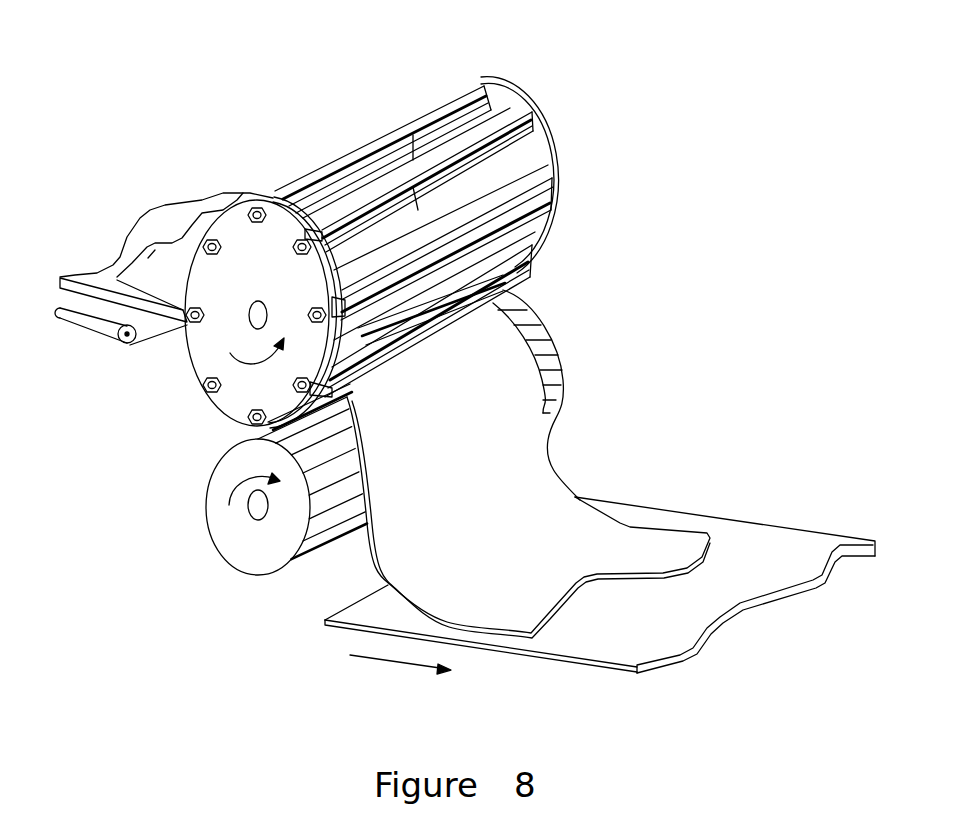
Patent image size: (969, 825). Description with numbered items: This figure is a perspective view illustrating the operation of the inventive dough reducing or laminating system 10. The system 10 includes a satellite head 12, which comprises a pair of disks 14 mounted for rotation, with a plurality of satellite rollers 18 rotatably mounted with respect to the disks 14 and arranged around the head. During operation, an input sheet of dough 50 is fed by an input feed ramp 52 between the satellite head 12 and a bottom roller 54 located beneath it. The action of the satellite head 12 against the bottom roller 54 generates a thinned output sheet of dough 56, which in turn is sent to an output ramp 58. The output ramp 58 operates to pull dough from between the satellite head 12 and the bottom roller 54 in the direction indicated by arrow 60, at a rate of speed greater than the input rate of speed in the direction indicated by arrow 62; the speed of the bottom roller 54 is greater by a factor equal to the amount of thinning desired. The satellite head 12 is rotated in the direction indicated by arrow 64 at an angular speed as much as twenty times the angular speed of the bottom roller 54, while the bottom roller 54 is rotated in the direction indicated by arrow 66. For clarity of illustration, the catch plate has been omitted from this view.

The system 10 is at (228, 78).
The satellite head 12 is at (565, 145).
The disks 14 is at (232, 398).
The satellite rollers 18 is at (318, 178).
The input sheet of dough 50 is at (150, 257).
The input feed ramp 52 is at (78, 277).
The bottom roller 54 is at (245, 556).
The thinned output sheet of dough 56 is at (543, 483).
The output ramp 58 is at (752, 538).
The arrow 60 is at (348, 672).
The arrow 62 is at (105, 361).
The arrow 64 is at (233, 355).
The arrow 66 is at (240, 510).